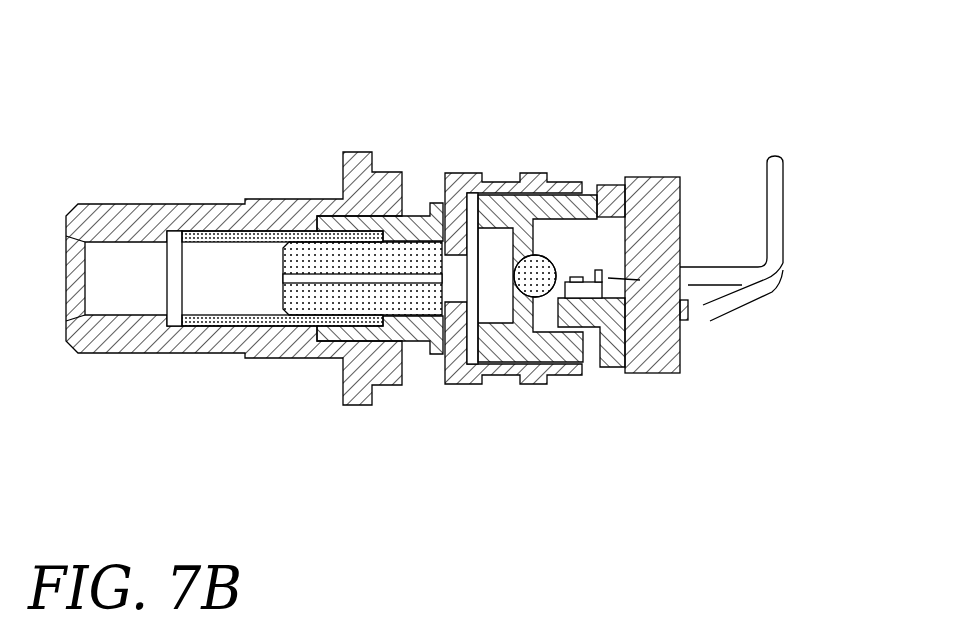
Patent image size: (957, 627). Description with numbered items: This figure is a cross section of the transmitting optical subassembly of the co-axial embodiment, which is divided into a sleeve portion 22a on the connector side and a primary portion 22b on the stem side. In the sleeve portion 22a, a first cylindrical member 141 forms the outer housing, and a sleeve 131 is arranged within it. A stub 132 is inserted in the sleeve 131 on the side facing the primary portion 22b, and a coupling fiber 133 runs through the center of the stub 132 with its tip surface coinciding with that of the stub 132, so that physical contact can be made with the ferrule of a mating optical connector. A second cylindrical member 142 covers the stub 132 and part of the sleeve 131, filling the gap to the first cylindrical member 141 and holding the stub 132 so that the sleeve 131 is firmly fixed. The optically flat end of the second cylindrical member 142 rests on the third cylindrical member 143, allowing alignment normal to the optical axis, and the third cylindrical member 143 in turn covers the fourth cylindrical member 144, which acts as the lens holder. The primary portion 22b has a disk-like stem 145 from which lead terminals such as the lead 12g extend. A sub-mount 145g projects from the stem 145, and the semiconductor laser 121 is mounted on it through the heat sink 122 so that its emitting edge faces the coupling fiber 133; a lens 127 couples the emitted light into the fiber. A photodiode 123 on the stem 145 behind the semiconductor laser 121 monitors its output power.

The first cylindrical member 141 is at (128, 212).
The sleeve 131 is at (237, 322).
The second cylindrical member 142 is at (400, 214).
The stub 132 is at (417, 300).
The coupling fiber 133 is at (288, 272).
The third cylindrical member 143 is at (513, 176).
The semiconductor laser 121 is at (576, 273).
The ball lens 127 is at (527, 293).
The heat sink 122 is at (668, 368).
The photodiode 123 is at (605, 290).
The fourth cylindrical member 144 is at (612, 192).
The stem 145 is at (663, 197).
The sub-mount 145g is at (604, 322).
The lead pin 12g is at (780, 284).
The sleeve portion 22a is at (443, 430).
The primary portion 22b is at (678, 430).